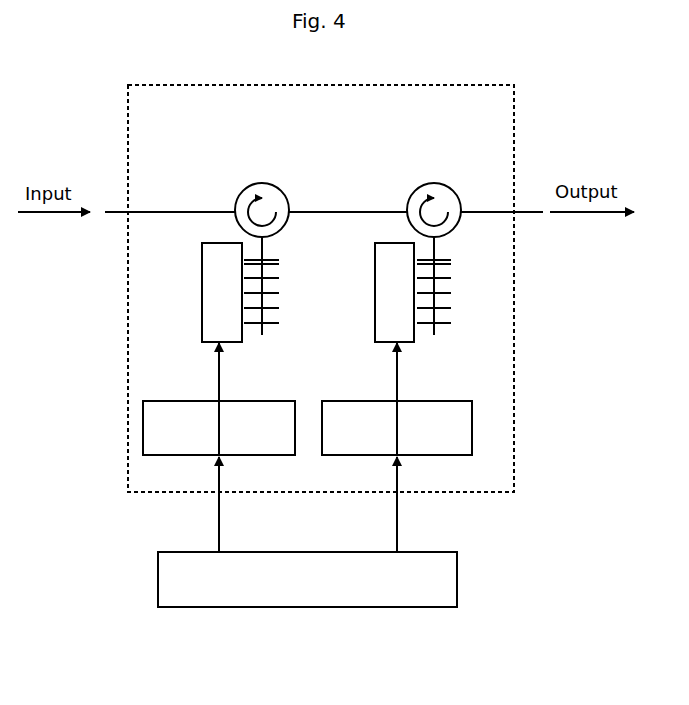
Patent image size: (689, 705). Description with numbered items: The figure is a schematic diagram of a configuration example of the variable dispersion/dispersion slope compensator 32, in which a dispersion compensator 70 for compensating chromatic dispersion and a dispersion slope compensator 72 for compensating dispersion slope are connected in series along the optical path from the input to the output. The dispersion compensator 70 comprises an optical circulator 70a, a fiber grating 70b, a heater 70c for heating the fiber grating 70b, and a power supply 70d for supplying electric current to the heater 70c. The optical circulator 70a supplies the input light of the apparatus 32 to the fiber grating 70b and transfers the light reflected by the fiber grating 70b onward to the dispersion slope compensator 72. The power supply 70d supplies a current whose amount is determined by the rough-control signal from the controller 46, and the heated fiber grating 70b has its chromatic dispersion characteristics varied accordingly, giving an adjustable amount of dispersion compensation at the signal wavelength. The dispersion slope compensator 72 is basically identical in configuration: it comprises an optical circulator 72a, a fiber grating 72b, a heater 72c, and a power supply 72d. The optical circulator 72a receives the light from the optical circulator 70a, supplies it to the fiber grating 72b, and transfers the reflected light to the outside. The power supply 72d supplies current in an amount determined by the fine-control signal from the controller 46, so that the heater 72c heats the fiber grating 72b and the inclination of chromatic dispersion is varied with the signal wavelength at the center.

The variable dispersion/dispersion slope compensator 32 is at (160, 115).
The dispersion compensator 70 is at (238, 286).
The optical circulator 70a is at (287, 201).
The fiber grating 70b is at (278, 283).
The heater 70c is at (202, 281).
The power supply 70d is at (170, 404).
The dispersion slope compensator 72 is at (411, 286).
The optical circulator 72a is at (411, 190).
The fiber grating 72b is at (447, 283).
The heater 72c is at (375, 311).
The power supply 72d is at (457, 403).
The controller 46 is at (457, 582).